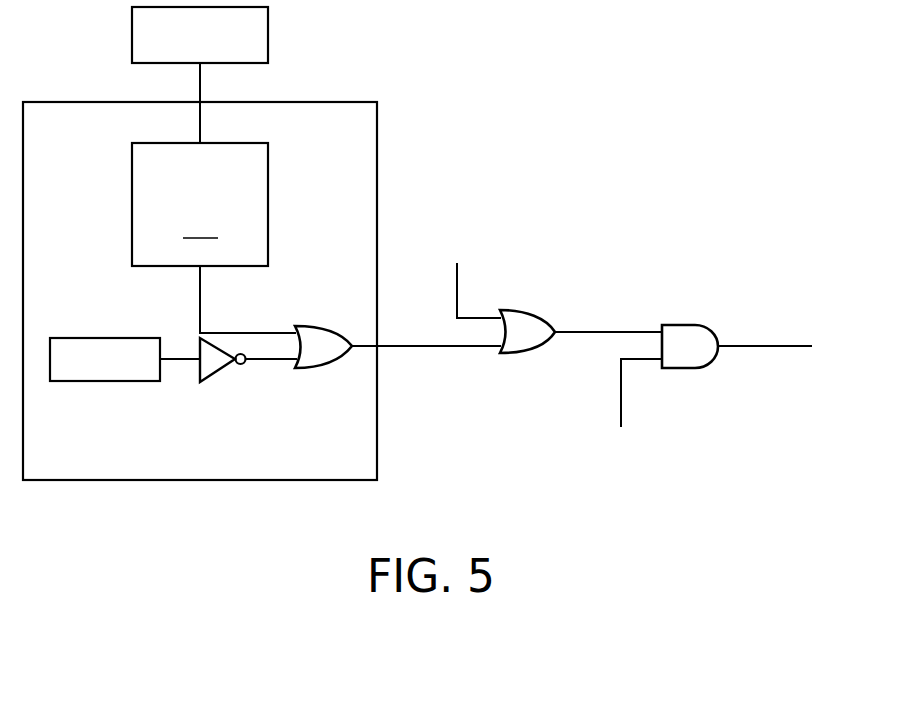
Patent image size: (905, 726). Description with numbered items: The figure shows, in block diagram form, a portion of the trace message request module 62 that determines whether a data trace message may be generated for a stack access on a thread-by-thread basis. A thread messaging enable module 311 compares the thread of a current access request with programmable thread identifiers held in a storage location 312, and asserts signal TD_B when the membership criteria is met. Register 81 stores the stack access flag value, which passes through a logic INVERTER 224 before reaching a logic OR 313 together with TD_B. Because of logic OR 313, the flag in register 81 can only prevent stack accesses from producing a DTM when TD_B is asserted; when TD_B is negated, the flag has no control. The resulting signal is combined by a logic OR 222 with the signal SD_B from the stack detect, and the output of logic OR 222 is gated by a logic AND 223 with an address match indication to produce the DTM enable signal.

The trace message request module 62 is at (594, 548).
The storage location 312 is at (268, 22).
The thread messaging enable module 311 is at (268, 186).
The Data Trace Address Register 81 is at (104, 338).
The logic INVERTER 224 is at (222, 371).
The logic OR 313 is at (314, 326).
The logic OR 222 is at (517, 310).
The logic AND 223 is at (678, 325).